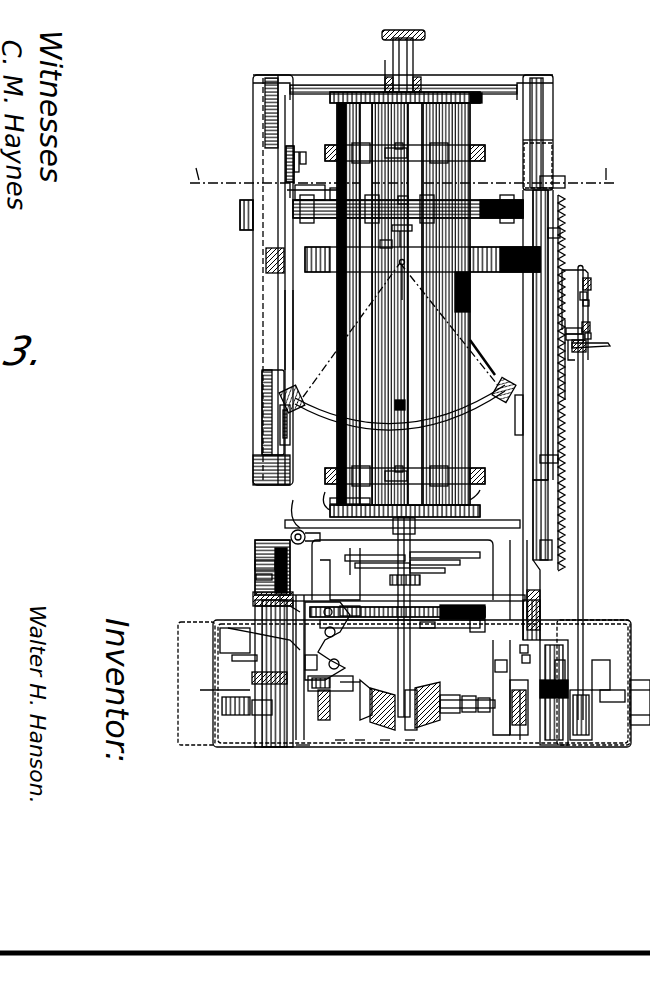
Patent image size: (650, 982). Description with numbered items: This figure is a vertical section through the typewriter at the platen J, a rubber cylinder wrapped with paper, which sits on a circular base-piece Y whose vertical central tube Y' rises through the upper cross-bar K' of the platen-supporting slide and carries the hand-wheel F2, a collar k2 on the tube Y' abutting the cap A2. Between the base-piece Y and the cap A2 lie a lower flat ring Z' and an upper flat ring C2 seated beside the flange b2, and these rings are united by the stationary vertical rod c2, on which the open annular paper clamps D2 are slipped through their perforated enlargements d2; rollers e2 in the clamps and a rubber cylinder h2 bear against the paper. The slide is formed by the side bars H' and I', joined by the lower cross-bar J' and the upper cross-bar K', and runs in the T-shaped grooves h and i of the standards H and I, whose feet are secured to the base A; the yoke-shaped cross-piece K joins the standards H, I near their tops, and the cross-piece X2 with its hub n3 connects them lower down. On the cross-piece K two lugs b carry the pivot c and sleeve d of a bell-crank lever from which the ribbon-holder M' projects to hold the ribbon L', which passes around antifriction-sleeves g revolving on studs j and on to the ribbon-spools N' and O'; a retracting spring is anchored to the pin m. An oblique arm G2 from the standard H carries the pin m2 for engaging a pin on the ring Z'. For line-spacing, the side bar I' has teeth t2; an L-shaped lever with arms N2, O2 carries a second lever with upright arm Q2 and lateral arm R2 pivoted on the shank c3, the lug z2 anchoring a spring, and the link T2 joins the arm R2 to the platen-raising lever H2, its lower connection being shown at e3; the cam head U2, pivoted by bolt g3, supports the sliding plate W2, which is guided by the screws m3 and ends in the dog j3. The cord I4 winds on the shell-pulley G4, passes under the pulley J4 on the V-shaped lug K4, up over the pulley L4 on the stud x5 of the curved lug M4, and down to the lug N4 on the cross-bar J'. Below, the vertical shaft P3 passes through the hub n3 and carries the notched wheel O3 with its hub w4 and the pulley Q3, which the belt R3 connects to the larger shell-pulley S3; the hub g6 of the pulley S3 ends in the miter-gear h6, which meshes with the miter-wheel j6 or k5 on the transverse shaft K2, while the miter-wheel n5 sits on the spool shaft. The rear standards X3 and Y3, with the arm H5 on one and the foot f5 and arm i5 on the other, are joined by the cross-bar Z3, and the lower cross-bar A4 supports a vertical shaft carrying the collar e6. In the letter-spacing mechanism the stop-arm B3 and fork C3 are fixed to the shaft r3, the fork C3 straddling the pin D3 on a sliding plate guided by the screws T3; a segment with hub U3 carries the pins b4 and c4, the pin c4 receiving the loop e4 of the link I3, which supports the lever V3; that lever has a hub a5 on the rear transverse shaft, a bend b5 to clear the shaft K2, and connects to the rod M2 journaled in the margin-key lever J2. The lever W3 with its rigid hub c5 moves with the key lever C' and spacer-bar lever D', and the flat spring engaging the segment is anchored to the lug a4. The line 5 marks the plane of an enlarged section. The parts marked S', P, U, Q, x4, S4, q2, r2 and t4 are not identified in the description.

The left frame post H' is at (257, 280).
The top frame bar K' is at (403, 72).
The right frame post I' is at (550, 317).
The right guide post I is at (563, 375).
The rack bar T2 is at (566, 492).
The vertical rod i is at (584, 585).
The bracket j3 is at (575, 270).
The stop block O' is at (572, 222).
The pawl block W2 is at (588, 290).
The pin m3 is at (590, 302).
The slide block U2 is at (592, 326).
The pin g3 is at (593, 336).
The lever S' is at (610, 344).
The hub c3 is at (588, 352).
The arm R2 is at (576, 358).
The rod N2 is at (570, 380).
The arm Q2 is at (566, 312).
The arm O2 is at (566, 328).
The guide t2 is at (560, 182).
The section line 5 is at (400, 180).
The cylinder c2 is at (380, 345).
The rod h2 is at (360, 120).
The top flange b2 is at (332, 100).
The block C2 is at (480, 100).
The shaft Y' is at (413, 65).
The cap F2 is at (382, 35).
The rod A2 is at (384, 95).
The collar D2 is at (470, 145).
The hub e3 is at (440, 152).
The hub e2 is at (440, 466).
The pin d2 is at (398, 148).
The bottom flange Z' is at (418, 507).
The link Z3 is at (484, 490).
The link Y is at (317, 491).
The plate z2 is at (345, 497).
The cross shelf g is at (322, 220).
The block L' is at (496, 190).
The pin M' is at (409, 188).
The bracket N' is at (231, 213).
The slide M4 is at (286, 156).
The lever L4 is at (296, 158).
The pin x5 is at (307, 160).
The bracket G2 is at (304, 192).
The pin m2 is at (340, 192).
The cross bar K is at (422, 259).
The pivot c is at (412, 228).
The pivot pin d is at (395, 261).
The block b is at (440, 285).
The arm m is at (404, 275).
The block J is at (469, 299).
The sector arc P is at (470, 420).
The clamps U is at (305, 392).
The posts Q is at (290, 420).
The slide bar H is at (256, 421).
The guide I4 is at (290, 336).
The plate N4 is at (298, 516).
The roller J4 is at (291, 536).
The block K4 is at (254, 560).
The plate X3 is at (256, 567).
The pin h is at (256, 578).
The hatched bar B3 is at (254, 598).
The frame Y3 is at (494, 625).
The shaft U3 is at (360, 555).
The plate G4 is at (377, 565).
The plates P3 is at (445, 594).
The hub n3 is at (420, 582).
The bar X2 is at (478, 596).
The rack T3 is at (487, 612).
The block x4 is at (362, 612).
The bar a4 is at (400, 627).
The hub e6 is at (430, 630).
The block A4 is at (477, 629).
The base A is at (245, 748).
The column j is at (274, 673).
The box D3 is at (230, 626).
The rod r3 is at (254, 608).
The lever C3 is at (261, 639).
The bar n5 is at (232, 660).
The block e4 is at (250, 678).
The rod b4 is at (240, 688).
The block C' is at (218, 702).
The block I3 is at (280, 700).
The lever V3 is at (330, 690).
The block c4 is at (306, 659).
The block b5 is at (330, 709).
The bearing H5 is at (350, 692).
The gear S3 is at (364, 697).
The bevel gear g6 is at (382, 715).
The bevel gear h6 is at (420, 712).
The shaft Q3 is at (470, 648).
The shaft R3 is at (460, 700).
The bearing O3 is at (455, 712).
The collar K2 is at (612, 760).
The collar M2 is at (479, 724).
The bracket k5 is at (498, 740).
The block f5 is at (518, 740).
The rod S4 is at (518, 745).
The pin i5 is at (518, 652).
The pin a5 is at (529, 661).
The column J2 is at (550, 748).
The bearing H2 is at (580, 748).
The pin q2 is at (563, 671).
The arm r2 is at (616, 690).
The shaft end D' is at (640, 729).
The pin c5 is at (300, 746).
The pin k2 is at (345, 746).
The rod W3 is at (365, 746).
The pin w4 is at (385, 746).
The pin j6 is at (420, 746).
The post J' is at (564, 586).
The pin t4 is at (546, 537).